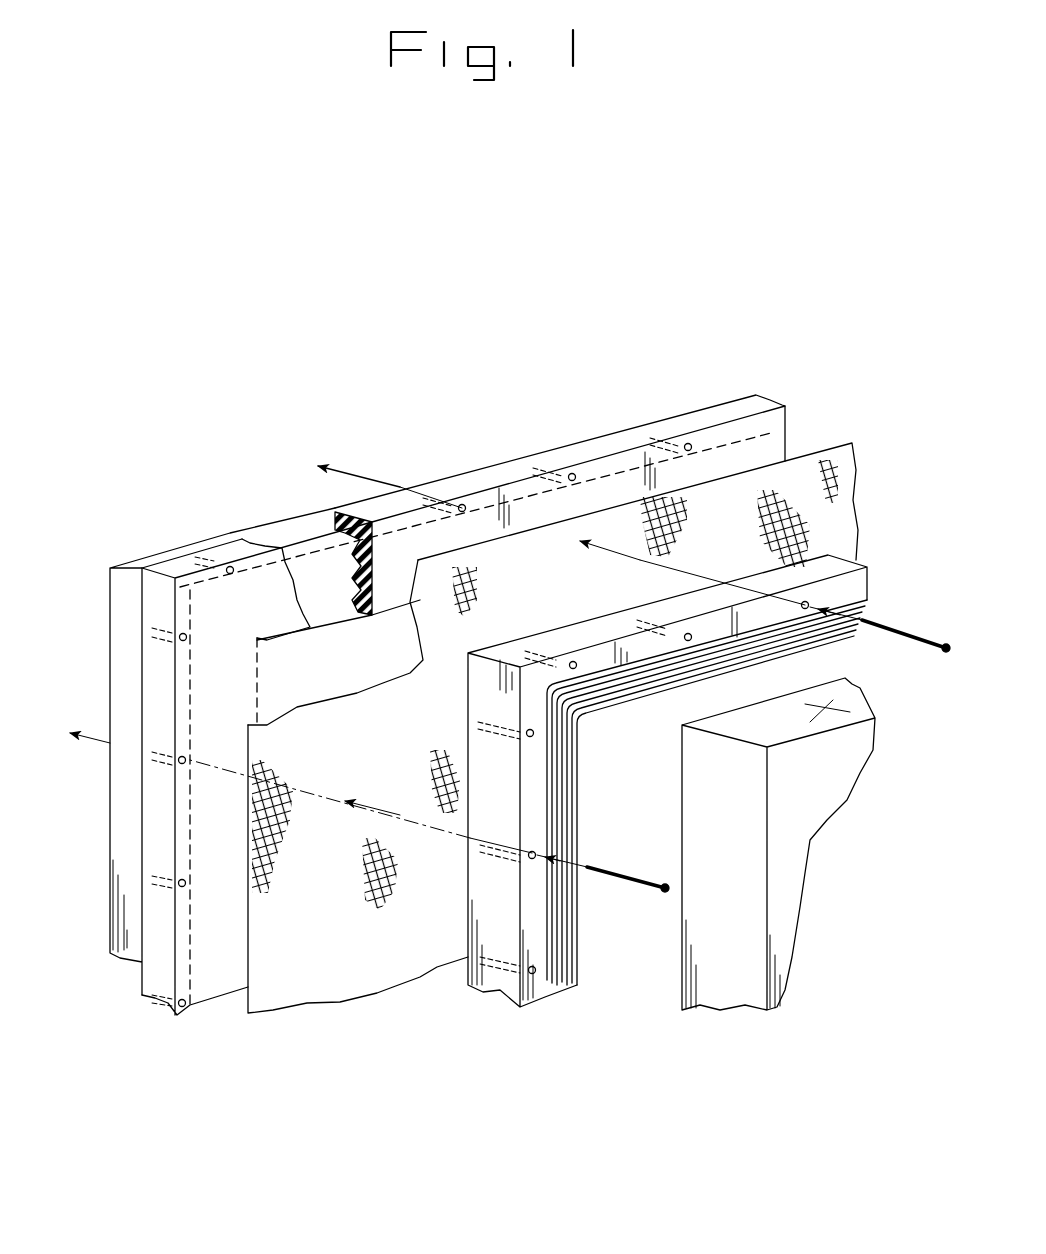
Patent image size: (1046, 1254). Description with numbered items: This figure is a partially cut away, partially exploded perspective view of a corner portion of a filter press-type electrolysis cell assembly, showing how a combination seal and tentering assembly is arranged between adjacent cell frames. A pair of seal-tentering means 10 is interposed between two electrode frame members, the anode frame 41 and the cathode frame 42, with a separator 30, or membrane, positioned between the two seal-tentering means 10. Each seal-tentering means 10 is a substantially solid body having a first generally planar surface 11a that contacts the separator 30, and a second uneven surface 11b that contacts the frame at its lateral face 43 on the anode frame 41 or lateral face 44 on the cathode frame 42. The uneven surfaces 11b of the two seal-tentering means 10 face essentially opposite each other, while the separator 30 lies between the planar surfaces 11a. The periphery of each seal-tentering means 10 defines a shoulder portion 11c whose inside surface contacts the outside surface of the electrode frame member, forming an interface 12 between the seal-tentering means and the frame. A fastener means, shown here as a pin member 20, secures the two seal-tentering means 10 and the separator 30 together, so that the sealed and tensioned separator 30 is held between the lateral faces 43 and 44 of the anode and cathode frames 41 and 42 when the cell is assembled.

The seal-tentering means 10 is at (778, 388).
The first generally planar surface 11a is at (593, 494).
The second uneven surface 11b is at (337, 568).
The shoulder portion 11c is at (343, 533).
The interface 12 is at (350, 525).
The pin member 20 is at (947, 642).
The separator 30 is at (810, 508).
The anode frame 41 is at (165, 555).
The cathode frame 42 is at (847, 683).
The lateral face of anode frame 43 is at (298, 577).
The lateral face of cathode frame 44 is at (683, 930).